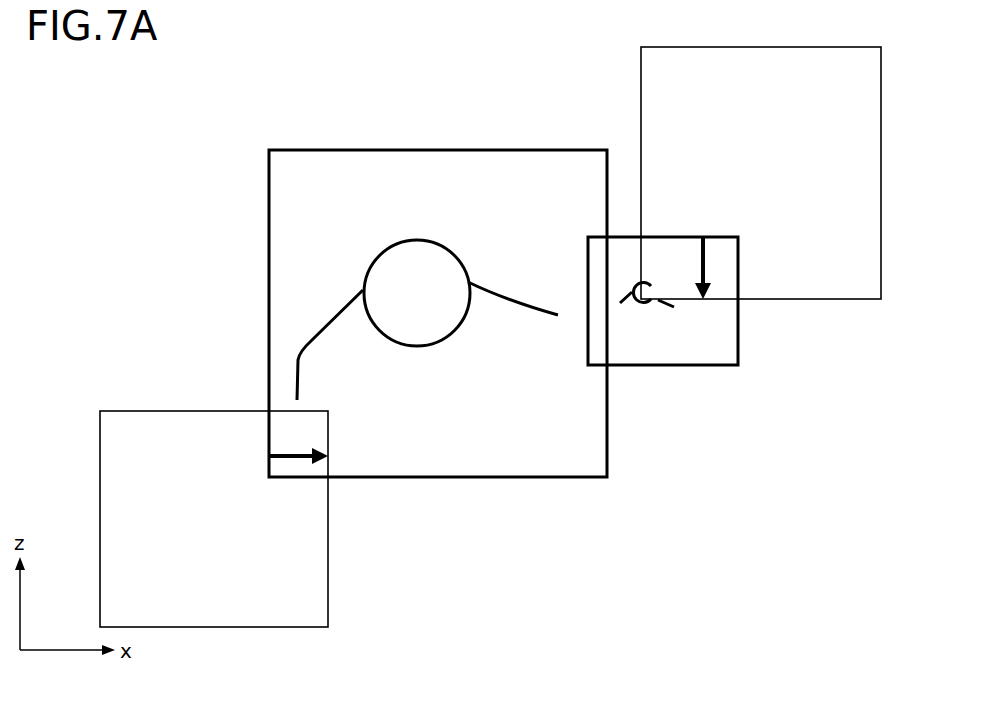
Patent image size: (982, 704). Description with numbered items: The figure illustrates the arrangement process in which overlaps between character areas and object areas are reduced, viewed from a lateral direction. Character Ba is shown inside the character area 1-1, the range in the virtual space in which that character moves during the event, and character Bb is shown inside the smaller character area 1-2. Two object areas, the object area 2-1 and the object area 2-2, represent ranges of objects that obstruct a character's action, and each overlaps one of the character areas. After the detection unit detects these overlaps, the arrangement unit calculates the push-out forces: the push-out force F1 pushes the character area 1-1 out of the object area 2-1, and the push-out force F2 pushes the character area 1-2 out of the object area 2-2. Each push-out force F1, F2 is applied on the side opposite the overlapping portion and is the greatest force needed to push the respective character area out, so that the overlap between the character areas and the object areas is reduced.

The character area 1-1 is at (405, 141).
The character area 1-2 is at (689, 375).
The object area 2-1 is at (156, 404).
The object area 2-2 is at (795, 40).
The character Ba is at (418, 240).
The character Bb is at (642, 306).
The push-out force F1 is at (295, 457).
The push-out force F2 is at (703, 265).